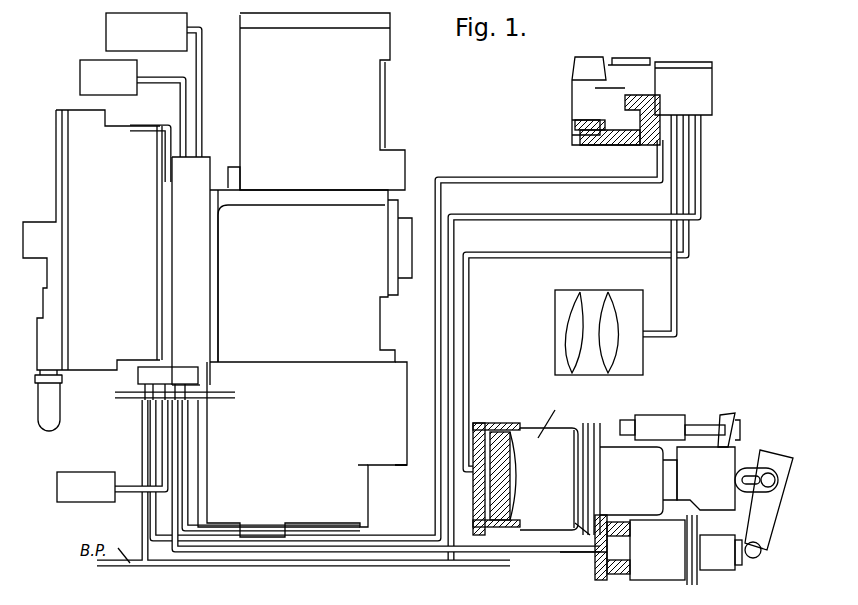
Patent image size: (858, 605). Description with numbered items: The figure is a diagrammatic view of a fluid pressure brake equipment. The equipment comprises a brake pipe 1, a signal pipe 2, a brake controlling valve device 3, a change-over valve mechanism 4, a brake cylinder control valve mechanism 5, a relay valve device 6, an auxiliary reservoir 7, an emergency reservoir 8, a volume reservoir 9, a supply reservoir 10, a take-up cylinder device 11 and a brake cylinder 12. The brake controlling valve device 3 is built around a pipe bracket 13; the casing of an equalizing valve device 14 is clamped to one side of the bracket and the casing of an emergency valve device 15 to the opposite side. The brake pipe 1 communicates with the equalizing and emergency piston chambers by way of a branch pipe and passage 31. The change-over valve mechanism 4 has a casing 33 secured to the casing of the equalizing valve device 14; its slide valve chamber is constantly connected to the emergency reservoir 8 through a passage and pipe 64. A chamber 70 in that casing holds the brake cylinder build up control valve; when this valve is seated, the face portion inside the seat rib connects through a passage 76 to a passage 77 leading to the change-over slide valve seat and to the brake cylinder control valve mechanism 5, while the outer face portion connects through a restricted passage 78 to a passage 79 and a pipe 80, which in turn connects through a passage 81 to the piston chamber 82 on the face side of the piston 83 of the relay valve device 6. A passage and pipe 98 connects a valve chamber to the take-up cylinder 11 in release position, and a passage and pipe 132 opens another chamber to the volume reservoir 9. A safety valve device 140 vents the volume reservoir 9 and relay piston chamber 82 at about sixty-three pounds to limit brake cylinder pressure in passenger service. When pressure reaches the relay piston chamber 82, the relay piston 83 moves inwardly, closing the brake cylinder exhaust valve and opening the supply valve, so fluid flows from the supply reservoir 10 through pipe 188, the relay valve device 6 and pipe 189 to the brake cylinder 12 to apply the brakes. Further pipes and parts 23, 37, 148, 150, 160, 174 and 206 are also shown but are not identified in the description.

The brake pipe 1 is at (97, 564).
The signal pipe 2 is at (236, 396).
The brake controlling valve device 3 is at (370, 317).
The change-over valve mechanism 4 is at (345, 498).
The brake cylinder control valve mechanism 5 is at (365, 136).
The relay valve device 6 is at (636, 78).
The auxiliary reservoir 7 is at (106, 23).
The emergency reservoir 8 is at (80, 68).
The volume reservoir 9 is at (66, 488).
The supply reservoir 10 is at (633, 363).
The take-up cylinder device 11 is at (672, 567).
The brake cylinder 12 is at (615, 457).
The pipe bracket 13 is at (195, 170).
The equalizing valve device 14 is at (373, 223).
The emergency valve device 15 is at (76, 189).
The auxiliary reservoir pipe 23 is at (200, 37).
The branch pipe and passage 31 is at (147, 411).
The casing 33 is at (385, 374).
The pipe connection 37 is at (343, 485).
The passage and pipe 64 is at (147, 81).
The chamber 70 is at (380, 502).
The passage 76 is at (510, 570).
The passage 77 is at (455, 560).
The restricted passage 78 is at (480, 570).
The passage 79 is at (450, 570).
The pipe 80 is at (494, 181).
The passage 81 is at (629, 134).
The relay piston chamber 82 is at (590, 136).
The relay piston 83 is at (574, 132).
The passage and pipe 98 is at (172, 522).
The passage and pipe 132 is at (166, 460).
The safety valve device 140 is at (53, 412).
The pipe 148 is at (305, 570).
The pipe 150 is at (262, 570).
The pipe 160 is at (372, 560).
The pipe 174 is at (413, 570).
The pipe 188 is at (678, 283).
The pipe 189 is at (538, 258).
The pipe 206 is at (418, 560).